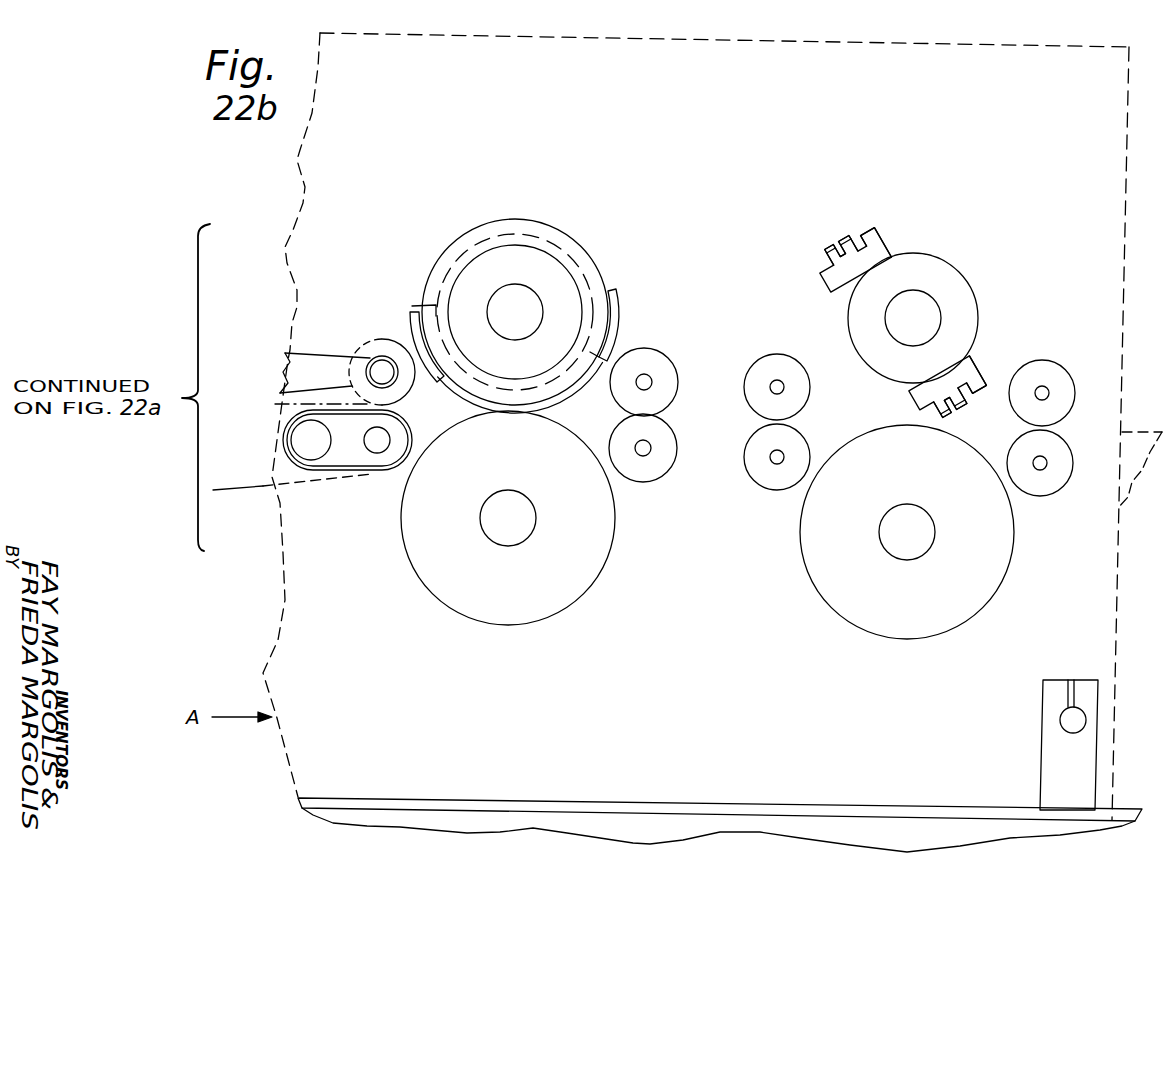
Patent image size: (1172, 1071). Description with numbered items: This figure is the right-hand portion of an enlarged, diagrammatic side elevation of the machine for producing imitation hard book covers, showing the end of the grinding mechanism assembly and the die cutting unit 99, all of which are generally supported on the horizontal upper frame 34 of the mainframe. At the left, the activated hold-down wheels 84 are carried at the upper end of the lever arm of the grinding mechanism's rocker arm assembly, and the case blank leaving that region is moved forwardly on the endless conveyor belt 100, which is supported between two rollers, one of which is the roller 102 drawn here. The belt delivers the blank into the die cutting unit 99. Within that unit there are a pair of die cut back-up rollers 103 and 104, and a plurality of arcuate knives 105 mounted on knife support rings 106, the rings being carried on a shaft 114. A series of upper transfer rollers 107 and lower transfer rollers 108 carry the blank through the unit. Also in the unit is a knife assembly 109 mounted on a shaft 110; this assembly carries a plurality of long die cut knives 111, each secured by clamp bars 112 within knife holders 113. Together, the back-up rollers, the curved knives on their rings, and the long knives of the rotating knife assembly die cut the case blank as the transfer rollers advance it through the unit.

The upper frame 34 is at (589, 800).
The hold-down wheels 84 is at (368, 350).
The die cutting unit 99 is at (768, 183).
The endless conveyor belt 100 is at (229, 490).
The roller 102 is at (378, 458).
The die cut back-up roller 103 is at (455, 593).
The die cut back-up roller 104 is at (914, 623).
The arcuate knives 105 is at (413, 310).
The knife support rings 106 is at (562, 231).
The upper transfer rollers 107 is at (747, 363).
The lower transfer rollers 108 is at (758, 473).
The knife assembly 109 is at (968, 268).
The shaft 110 is at (925, 316).
The long die cut knives 111 is at (841, 250).
The clamp bars 112 is at (858, 240).
The knife holders 113 is at (895, 243).
The shaft 114 is at (501, 300).